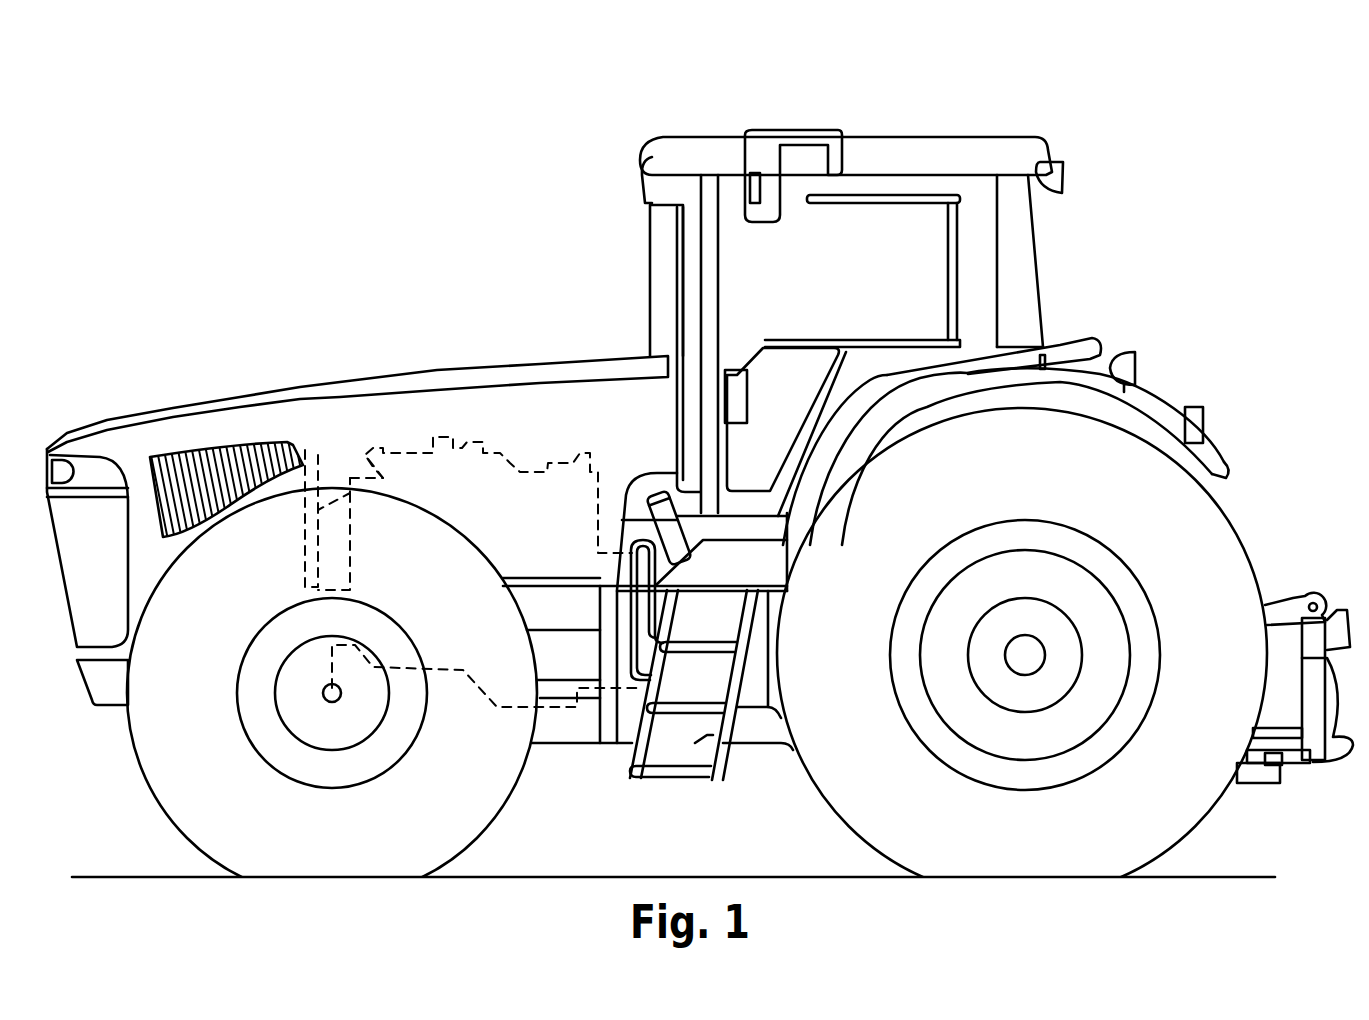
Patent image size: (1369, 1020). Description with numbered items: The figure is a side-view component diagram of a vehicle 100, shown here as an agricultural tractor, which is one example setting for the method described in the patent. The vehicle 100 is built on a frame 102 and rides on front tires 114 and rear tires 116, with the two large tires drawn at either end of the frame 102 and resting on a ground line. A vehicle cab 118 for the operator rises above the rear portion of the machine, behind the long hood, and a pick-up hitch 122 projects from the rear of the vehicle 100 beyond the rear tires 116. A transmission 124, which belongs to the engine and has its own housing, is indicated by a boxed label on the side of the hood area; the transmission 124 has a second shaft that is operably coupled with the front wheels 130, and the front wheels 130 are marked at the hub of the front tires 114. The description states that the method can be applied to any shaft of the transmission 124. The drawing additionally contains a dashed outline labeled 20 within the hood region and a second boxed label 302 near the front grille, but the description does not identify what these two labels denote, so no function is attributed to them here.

The vehicle 100 is at (1103, 137).
The frame 102 is at (568, 664).
The front tires 114 is at (143, 778).
The rear tires 116 is at (833, 803).
The vehicle cab 118 is at (1040, 268).
The pick-up hitch 122 is at (1297, 770).
The transmission 124 is at (582, 514).
The front wheels 130 is at (343, 676).
The engine 20 is at (443, 440).
The grille sensor 302 is at (250, 411).